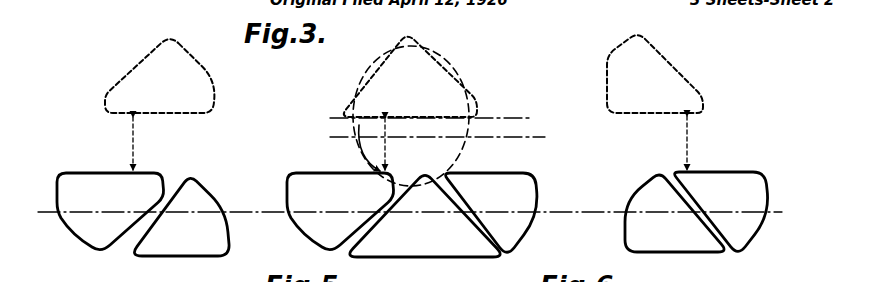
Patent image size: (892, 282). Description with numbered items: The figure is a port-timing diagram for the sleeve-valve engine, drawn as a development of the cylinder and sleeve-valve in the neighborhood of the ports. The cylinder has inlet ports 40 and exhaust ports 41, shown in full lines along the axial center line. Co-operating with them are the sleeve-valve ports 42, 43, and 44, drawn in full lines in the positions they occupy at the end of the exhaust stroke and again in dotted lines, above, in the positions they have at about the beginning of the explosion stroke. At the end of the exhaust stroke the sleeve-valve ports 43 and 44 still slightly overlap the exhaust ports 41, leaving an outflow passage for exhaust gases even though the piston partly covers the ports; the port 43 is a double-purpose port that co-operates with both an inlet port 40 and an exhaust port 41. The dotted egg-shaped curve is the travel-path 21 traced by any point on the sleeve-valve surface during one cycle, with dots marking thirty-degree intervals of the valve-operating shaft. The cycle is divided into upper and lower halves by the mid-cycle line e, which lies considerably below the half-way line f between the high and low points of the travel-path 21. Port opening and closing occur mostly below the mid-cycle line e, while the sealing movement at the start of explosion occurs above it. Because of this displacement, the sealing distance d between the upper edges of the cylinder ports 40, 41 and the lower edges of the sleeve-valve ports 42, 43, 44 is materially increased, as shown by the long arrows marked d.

The travel-path 21 is at (455, 95).
The inlet port 40 is at (68, 227).
The exhaust port 41 is at (535, 232).
The sleeve-valve port 42 is at (196, 49).
The sleeve-valve port 43 is at (420, 43).
The sleeve-valve port 44 is at (680, 66).
The sealing distance d is at (409, 143).
The mid-cycle line e is at (507, 137).
The half-way line f is at (507, 118).